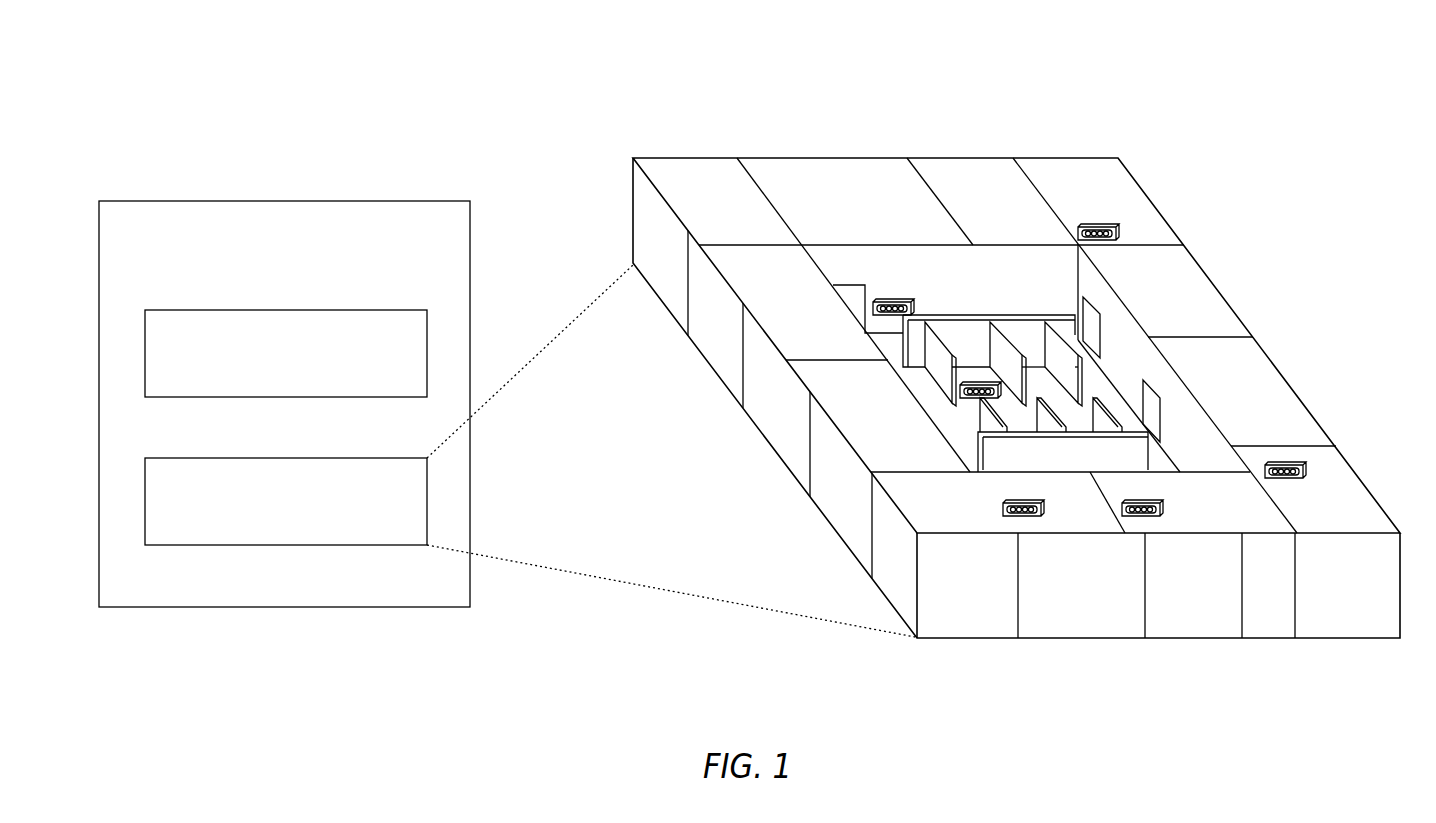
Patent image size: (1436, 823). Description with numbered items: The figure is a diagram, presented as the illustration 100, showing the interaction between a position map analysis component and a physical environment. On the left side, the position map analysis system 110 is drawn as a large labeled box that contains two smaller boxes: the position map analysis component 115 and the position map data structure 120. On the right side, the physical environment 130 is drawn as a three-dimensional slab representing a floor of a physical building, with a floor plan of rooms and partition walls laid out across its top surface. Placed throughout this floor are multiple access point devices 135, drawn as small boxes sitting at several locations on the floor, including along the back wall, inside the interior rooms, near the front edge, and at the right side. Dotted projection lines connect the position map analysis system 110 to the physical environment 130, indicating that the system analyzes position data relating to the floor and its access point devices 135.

The illustration 100 is at (568, 53).
The position map analysis system 110 is at (450, 245).
The position map analysis component 115 is at (268, 390).
The position map data structure 120 is at (268, 538).
The physical environment 130 is at (1007, 122).
The access point devices 135 is at (975, 381).